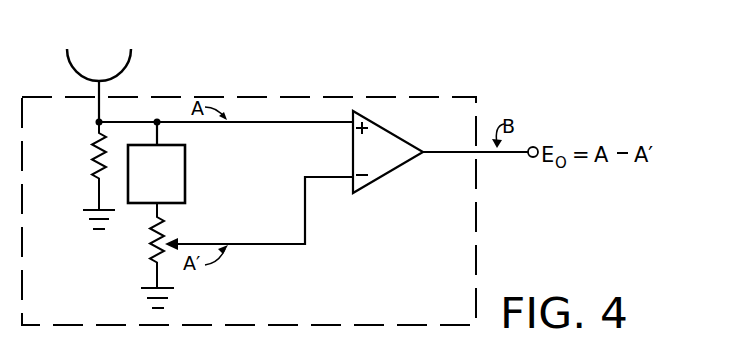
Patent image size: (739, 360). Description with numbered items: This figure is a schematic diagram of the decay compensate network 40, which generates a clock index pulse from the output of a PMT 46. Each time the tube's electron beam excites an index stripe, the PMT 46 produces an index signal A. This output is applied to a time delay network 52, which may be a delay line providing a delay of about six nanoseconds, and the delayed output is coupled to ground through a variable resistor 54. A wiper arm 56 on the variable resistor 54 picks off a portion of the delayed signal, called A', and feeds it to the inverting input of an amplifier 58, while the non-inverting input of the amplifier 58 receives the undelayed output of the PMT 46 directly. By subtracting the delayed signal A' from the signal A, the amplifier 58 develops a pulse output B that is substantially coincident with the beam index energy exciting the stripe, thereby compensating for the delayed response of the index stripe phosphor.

The decay compensate network 40 is at (478, 242).
The PMT 46 is at (68, 68).
The time delay network 52 is at (170, 205).
The variable resistor 54 is at (152, 243).
The wiper arm 56 is at (223, 243).
The amplifier 58 is at (385, 176).